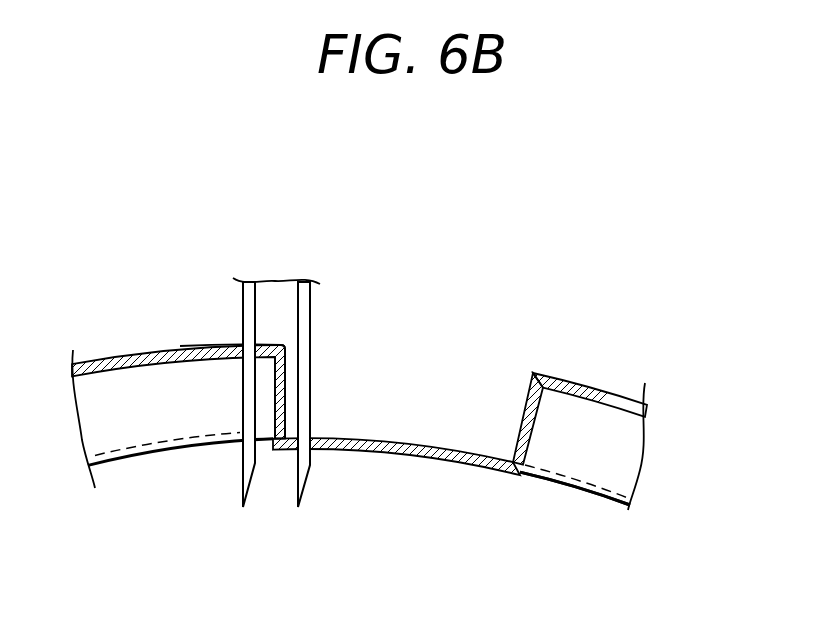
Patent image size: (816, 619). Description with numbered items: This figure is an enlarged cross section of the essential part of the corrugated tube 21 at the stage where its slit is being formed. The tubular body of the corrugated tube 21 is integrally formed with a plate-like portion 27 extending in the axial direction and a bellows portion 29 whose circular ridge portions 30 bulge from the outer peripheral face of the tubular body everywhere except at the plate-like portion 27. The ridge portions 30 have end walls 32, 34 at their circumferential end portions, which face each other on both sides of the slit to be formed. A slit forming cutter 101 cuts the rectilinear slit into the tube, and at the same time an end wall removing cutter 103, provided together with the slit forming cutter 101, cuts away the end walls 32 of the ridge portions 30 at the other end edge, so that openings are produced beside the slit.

The corrugated tube 21 is at (445, 318).
The plate-like portion 27 is at (445, 429).
The bellows portion 29 is at (211, 334).
The ridge portion 30 is at (128, 362).
The end wall 32 is at (284, 402).
The end wall 34 is at (518, 415).
The slit forming cutter 101 is at (312, 466).
The end wall removing cutter 103 is at (242, 468).